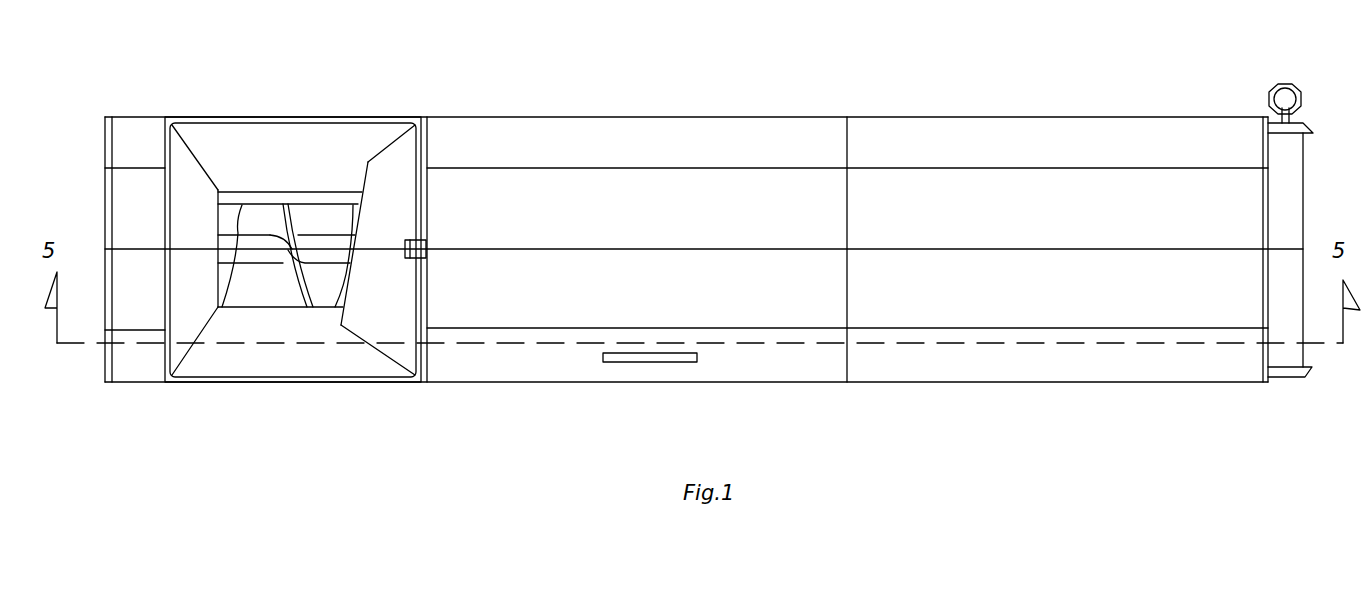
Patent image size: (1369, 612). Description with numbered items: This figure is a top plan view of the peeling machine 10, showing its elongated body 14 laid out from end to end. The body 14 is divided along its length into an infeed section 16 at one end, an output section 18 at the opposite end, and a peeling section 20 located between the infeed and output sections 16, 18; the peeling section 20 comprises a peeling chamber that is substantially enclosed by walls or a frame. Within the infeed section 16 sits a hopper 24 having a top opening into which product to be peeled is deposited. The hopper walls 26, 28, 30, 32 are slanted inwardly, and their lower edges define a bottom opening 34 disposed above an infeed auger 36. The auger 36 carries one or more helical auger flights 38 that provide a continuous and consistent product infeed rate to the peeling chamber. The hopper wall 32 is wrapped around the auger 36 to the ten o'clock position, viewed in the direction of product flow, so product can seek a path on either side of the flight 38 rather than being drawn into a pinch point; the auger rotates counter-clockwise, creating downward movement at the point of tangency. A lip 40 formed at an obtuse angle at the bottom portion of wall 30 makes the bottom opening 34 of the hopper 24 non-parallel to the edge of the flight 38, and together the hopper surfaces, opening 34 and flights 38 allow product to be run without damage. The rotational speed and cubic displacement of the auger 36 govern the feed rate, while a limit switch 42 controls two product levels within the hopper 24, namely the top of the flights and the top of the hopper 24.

The peeling machine 10 is at (752, 48).
The elongated body 14 is at (572, 115).
The infeed section 16 is at (120, 115).
The output section 18 is at (1098, 385).
The peeling section 20 is at (540, 385).
The hopper 24 is at (212, 115).
The hopper wall 26 is at (297, 350).
The hopper wall 28 is at (185, 205).
The hopper wall 30 is at (303, 143).
The hopper wall 32 is at (398, 213).
The bottom opening 34 is at (325, 195).
The infeed auger 36 is at (243, 255).
The helical auger flight 38 is at (332, 273).
The lip 40 is at (267, 196).
The limit switch 42 is at (420, 245).